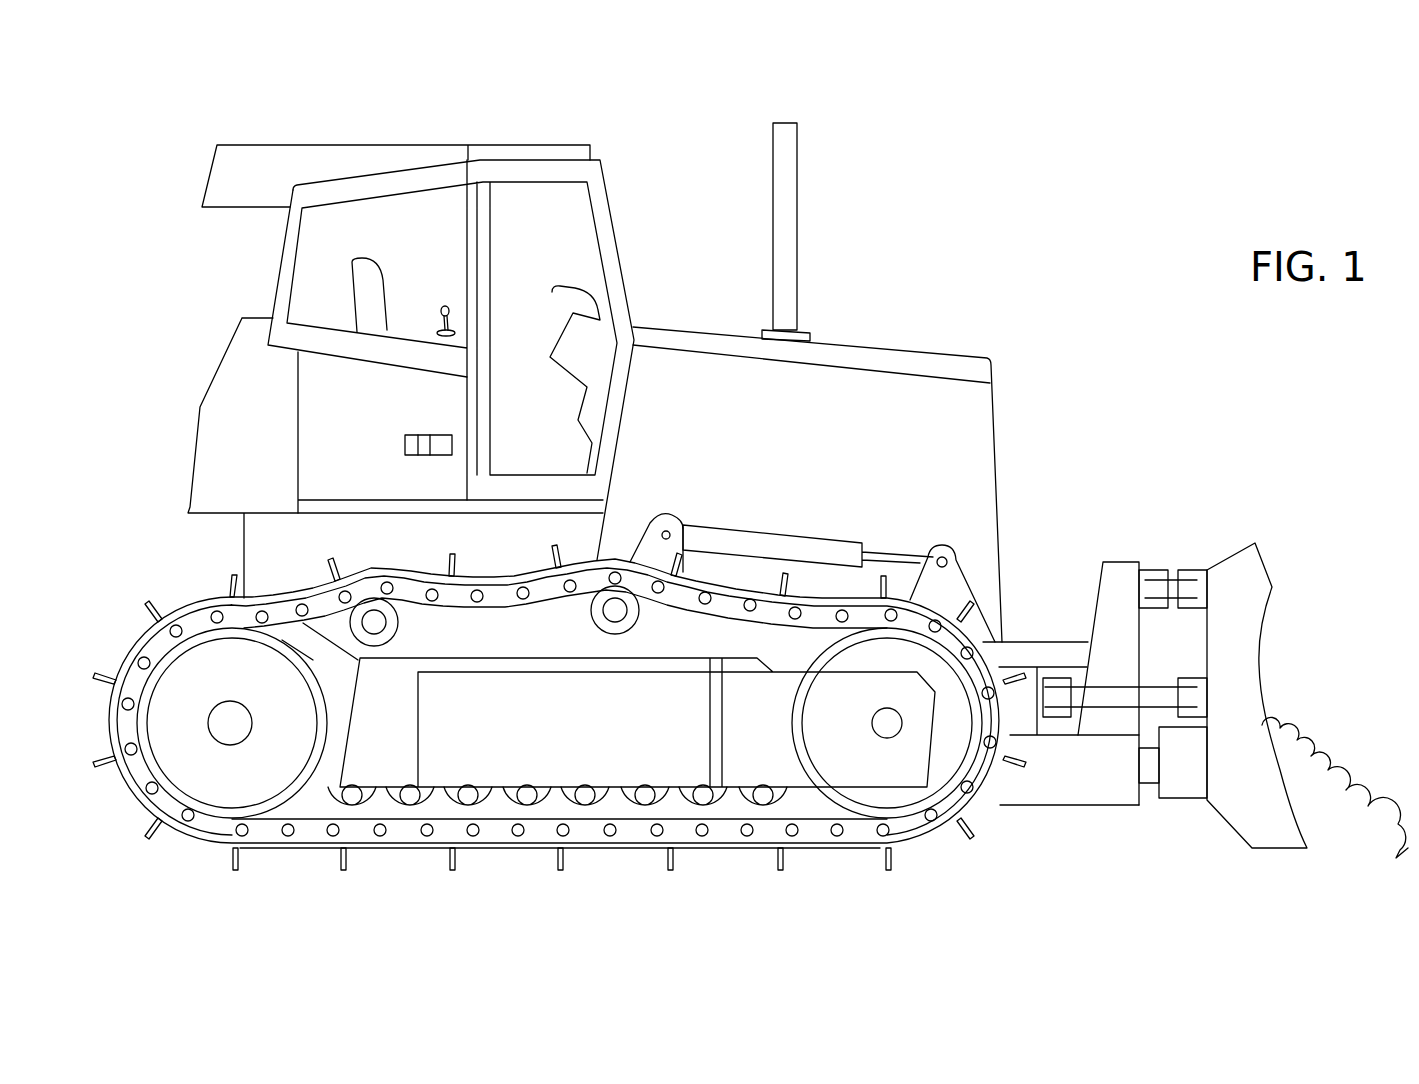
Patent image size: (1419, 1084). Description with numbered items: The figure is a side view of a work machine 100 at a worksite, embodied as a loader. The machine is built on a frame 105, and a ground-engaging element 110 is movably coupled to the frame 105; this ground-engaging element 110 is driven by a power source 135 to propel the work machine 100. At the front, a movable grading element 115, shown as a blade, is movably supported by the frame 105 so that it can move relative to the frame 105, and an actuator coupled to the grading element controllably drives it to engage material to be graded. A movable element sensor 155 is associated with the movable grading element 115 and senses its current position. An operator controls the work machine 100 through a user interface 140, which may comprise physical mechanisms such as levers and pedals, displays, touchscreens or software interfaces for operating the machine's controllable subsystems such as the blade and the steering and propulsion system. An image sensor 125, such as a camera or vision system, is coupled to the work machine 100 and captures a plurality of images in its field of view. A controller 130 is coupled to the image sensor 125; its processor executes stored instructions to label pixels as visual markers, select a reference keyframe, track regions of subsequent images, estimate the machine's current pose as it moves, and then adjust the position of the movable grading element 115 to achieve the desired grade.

The work machine 100 is at (1127, 95).
The frame 105 is at (231, 537).
The ground-engaging element 110 is at (623, 873).
The movable grading element 115 is at (1222, 482).
The image sensor 125 is at (625, 95).
The controller 130 is at (722, 424).
The power source 135 is at (817, 486).
The user interface 140 is at (605, 284).
The movable element sensor 155 is at (1267, 537).